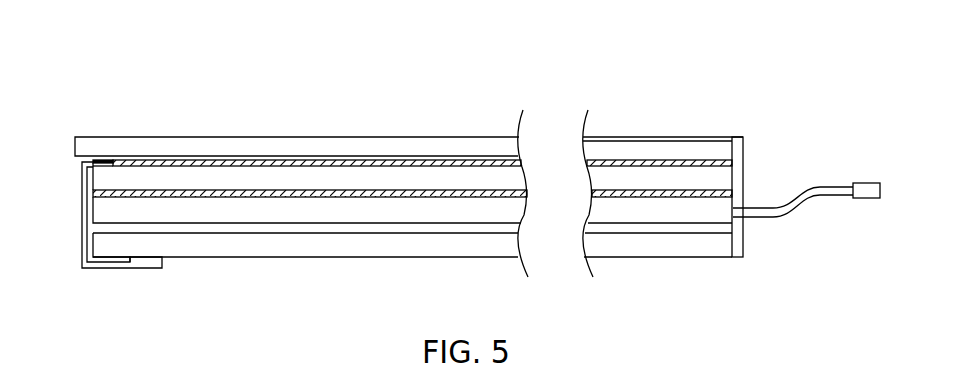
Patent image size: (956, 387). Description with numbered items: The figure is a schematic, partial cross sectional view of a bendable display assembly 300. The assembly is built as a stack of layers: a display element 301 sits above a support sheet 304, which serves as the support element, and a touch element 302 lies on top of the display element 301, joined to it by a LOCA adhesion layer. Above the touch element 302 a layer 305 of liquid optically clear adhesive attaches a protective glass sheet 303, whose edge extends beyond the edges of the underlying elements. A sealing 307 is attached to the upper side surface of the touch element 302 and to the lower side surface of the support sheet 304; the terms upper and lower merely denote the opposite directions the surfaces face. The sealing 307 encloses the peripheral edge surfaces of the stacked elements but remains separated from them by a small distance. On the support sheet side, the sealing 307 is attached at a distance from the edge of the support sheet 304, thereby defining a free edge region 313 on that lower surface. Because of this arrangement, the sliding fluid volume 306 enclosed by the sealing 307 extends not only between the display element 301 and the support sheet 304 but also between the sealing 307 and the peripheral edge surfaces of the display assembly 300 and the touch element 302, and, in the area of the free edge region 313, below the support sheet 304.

The display assembly 300 is at (143, 83).
The display element 301 is at (380, 213).
The touch element 302 is at (250, 178).
The protective glass sheet 303 is at (346, 149).
The support sheet 304 is at (275, 247).
The layer of liquid optically clear adhesive 305 is at (317, 161).
The sliding fluid volume 306 is at (228, 227).
The sealing 307 is at (85, 207).
The free edge region 313 is at (110, 258).